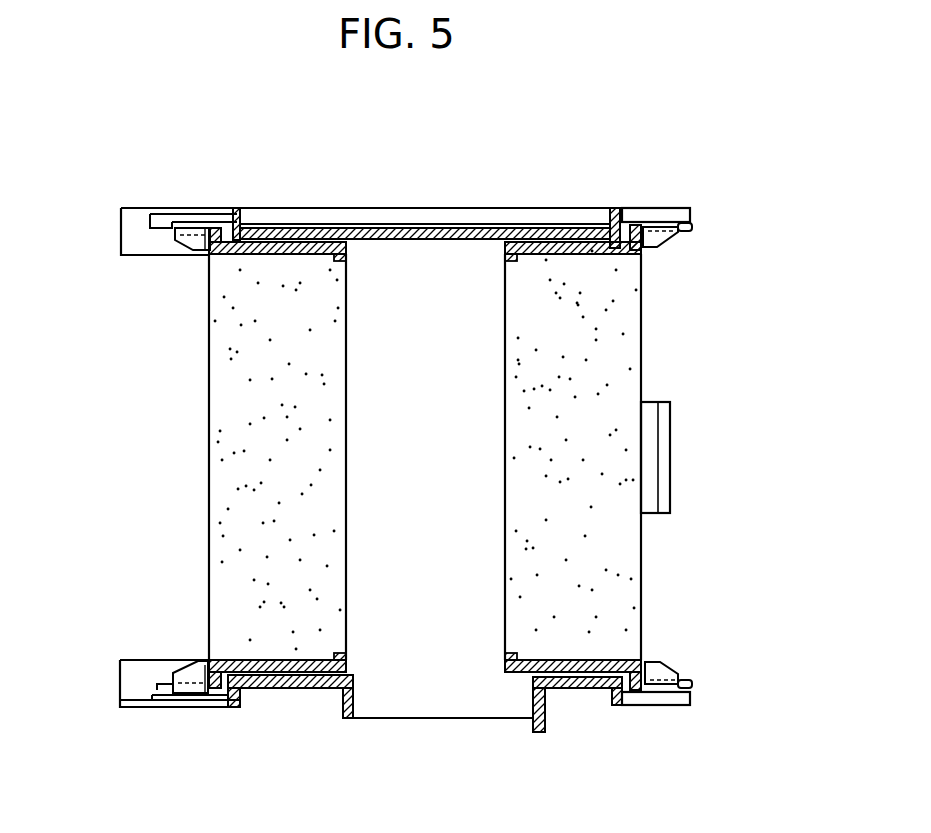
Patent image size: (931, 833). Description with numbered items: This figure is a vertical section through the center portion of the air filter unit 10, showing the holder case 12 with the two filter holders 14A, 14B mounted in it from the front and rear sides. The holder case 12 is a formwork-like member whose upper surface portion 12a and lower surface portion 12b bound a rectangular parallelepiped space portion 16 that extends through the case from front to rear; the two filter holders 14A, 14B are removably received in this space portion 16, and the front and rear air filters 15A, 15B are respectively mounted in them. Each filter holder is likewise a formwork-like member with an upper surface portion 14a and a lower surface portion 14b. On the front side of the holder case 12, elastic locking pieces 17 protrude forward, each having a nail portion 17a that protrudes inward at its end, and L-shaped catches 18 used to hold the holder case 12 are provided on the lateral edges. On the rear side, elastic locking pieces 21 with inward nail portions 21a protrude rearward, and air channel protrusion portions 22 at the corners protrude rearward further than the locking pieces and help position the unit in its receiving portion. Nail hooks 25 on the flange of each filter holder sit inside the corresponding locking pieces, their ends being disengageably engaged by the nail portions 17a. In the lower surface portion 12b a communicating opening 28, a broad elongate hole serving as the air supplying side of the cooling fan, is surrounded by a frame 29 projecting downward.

The air filter unit 10 is at (248, 197).
The holder case 12 is at (382, 200).
The upper surface portion 12a is at (465, 228).
The lower surface portion 12b is at (280, 673).
The filter holder 14A is at (684, 337).
The filter holder 14B is at (188, 383).
The upper surface portion 14a is at (290, 240).
The lower surface portion 14b is at (570, 692).
The front air filter 15A is at (630, 565).
The rear air filter 15B is at (230, 458).
The space portion 16 is at (397, 519).
The locking piece 17 is at (650, 208).
The nail portion 17a is at (693, 229).
The catch 18 is at (667, 477).
The locking piece 21 is at (192, 207).
The nail portion 21a is at (175, 230).
The air channel protrusion portion 22 is at (125, 208).
The nail hook 25 is at (188, 248).
The communicating opening 28 is at (533, 692).
The frame 29 is at (343, 716).